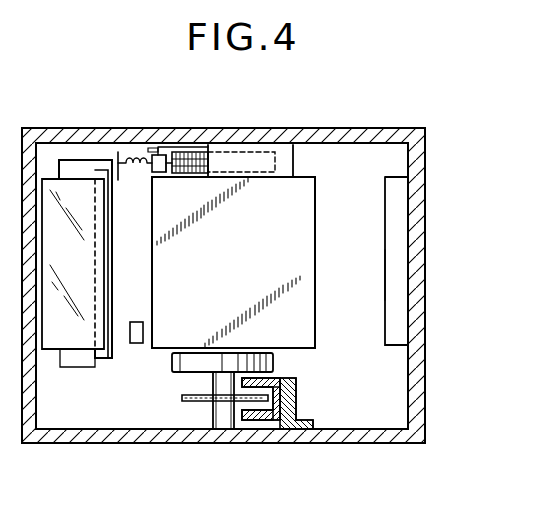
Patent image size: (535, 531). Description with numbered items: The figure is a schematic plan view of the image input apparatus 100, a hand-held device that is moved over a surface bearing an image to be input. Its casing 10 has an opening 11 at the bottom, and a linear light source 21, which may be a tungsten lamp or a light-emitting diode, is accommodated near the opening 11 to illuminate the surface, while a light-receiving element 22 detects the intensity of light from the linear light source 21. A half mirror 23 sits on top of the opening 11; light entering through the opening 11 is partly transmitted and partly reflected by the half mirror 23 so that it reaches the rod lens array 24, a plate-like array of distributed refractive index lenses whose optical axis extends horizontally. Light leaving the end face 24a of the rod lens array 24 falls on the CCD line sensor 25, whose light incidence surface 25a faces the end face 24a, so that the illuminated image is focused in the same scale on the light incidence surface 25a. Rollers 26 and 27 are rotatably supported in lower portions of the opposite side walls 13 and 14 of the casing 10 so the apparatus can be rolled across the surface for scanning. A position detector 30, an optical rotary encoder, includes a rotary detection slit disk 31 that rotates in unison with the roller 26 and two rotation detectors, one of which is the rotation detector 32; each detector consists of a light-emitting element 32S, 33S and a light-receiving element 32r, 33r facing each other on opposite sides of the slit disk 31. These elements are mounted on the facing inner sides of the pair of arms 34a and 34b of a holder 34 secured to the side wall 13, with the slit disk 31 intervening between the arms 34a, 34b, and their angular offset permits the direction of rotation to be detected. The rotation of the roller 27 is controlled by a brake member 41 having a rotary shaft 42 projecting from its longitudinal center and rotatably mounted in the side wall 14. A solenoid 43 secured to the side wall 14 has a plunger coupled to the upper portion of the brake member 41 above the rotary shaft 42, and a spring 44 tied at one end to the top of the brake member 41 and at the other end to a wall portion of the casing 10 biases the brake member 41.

The image input apparatus 100 is at (442, 104).
The casing 10 is at (418, 413).
The opening 11 is at (78, 362).
The side wall 13 is at (192, 443).
The side wall 14 is at (233, 133).
The linear light source 21 is at (107, 360).
The light-receiving element 22 is at (137, 343).
The half mirror 23 is at (98, 242).
The rod lens array 24 is at (362, 247).
The end face 24a is at (315, 260).
The CCD line sensor 25 is at (400, 222).
The light incidence surface 25a is at (385, 272).
The roller 26 is at (192, 367).
The roller 27 is at (188, 152).
The position detector 30 is at (250, 422).
The rotary detection slit disk 31 is at (193, 403).
The rotation detector 32 is at (266, 424).
The light-emitting element 32S is at (256, 418).
The light-emitting element 33S is at (280, 461).
The light-receiving element 32r is at (274, 378).
The light-receiving element 33r is at (307, 368).
The holder 34 is at (313, 422).
The arm 34a is at (296, 384).
The arm 34b is at (296, 434).
The brake member 41 is at (152, 172).
The rotary shaft 42 is at (152, 152).
The solenoid 43 is at (288, 157).
The spring 44 is at (128, 160).